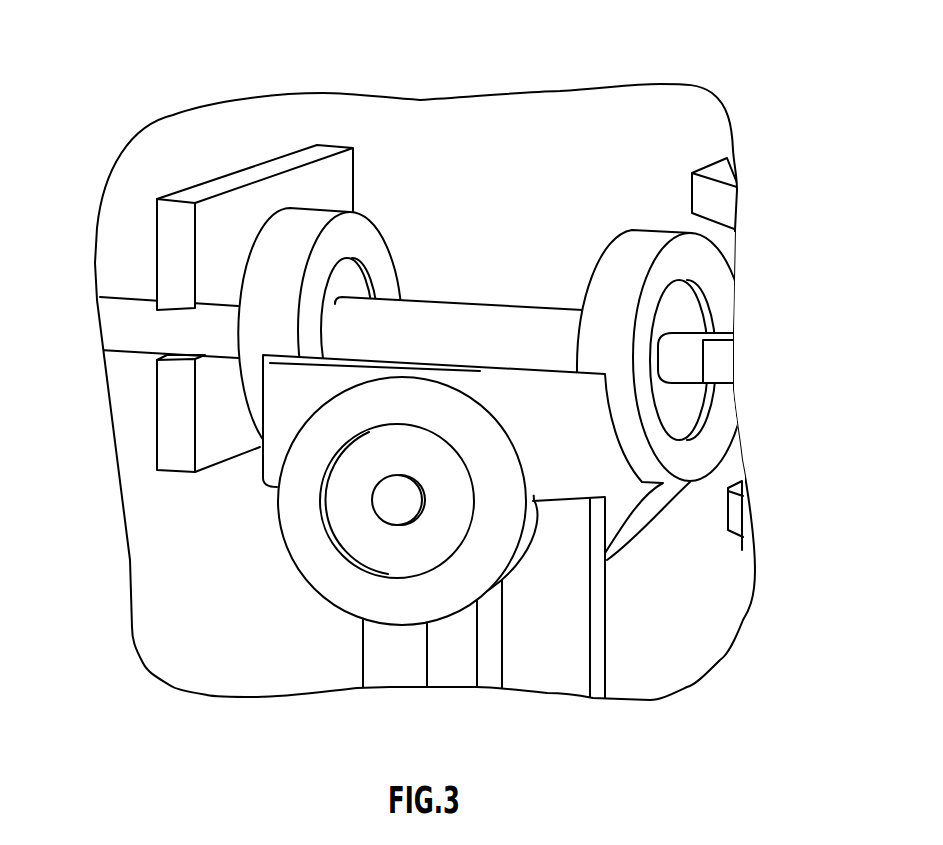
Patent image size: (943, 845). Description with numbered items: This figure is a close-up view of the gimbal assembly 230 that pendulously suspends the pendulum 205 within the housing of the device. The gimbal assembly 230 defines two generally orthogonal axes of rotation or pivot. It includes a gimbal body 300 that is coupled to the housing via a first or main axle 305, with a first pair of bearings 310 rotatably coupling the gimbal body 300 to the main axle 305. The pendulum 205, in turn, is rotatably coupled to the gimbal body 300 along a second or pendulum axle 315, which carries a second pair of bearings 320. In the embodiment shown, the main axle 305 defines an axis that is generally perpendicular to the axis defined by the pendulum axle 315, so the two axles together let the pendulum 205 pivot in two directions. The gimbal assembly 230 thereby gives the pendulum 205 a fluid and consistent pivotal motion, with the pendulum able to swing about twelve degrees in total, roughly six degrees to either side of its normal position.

The pendulum 205 is at (545, 662).
The gimbal assembly 230 is at (735, 243).
The gimbal body 300 is at (597, 470).
The main axle 305 is at (137, 326).
The first pair of bearings 310 is at (353, 242).
The pendulum axle 315 is at (390, 502).
The second pair of bearings 320 is at (370, 542).